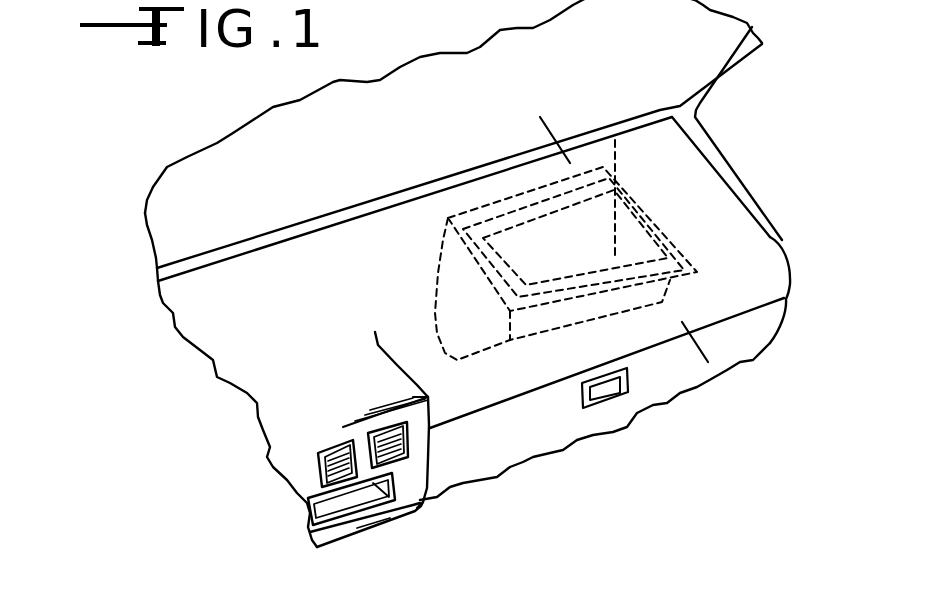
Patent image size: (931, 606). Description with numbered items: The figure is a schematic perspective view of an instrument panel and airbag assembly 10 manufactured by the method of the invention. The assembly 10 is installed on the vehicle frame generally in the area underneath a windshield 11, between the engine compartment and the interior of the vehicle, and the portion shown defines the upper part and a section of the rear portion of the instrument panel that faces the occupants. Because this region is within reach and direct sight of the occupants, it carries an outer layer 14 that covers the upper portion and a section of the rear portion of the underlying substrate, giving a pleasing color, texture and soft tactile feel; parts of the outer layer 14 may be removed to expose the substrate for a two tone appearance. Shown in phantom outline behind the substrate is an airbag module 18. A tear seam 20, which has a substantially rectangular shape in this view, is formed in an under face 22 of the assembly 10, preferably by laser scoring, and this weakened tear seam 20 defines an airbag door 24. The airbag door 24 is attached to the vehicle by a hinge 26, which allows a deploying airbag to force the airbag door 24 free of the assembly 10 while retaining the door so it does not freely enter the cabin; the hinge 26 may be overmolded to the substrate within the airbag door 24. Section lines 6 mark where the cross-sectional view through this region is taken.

The section line 6- 6 is at (586, 112).
The instrument panel and airbag assembly 10 is at (134, 188).
The windshield 11 is at (253, 158).
The outer layer 14 is at (284, 303).
The airbag module 18 is at (427, 294).
The tear seam 20 is at (633, 187).
The under face 22 is at (637, 272).
The airbag door 24 is at (615, 140).
The hinge 26 is at (620, 228).